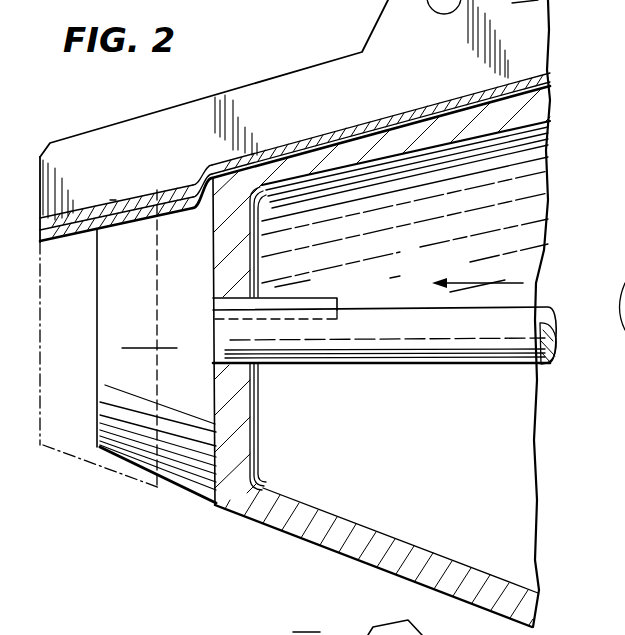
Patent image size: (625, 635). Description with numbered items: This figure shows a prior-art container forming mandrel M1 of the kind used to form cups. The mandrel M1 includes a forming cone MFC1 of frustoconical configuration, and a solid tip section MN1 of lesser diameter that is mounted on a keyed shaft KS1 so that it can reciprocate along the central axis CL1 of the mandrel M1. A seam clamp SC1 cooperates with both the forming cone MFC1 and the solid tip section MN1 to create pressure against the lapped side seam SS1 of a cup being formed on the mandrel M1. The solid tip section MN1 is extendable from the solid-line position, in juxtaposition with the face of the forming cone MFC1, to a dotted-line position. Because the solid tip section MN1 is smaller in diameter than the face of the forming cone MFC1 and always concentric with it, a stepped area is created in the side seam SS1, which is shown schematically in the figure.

The seam clamp SC1 is at (300, 90).
The side seam SS1 is at (409, 104).
The forming cone MFC1 is at (366, 160).
The container forming mandrel M1 is at (490, 259).
The keyed shaft KS1 is at (316, 304).
The central axis CL1 is at (492, 348).
The solid tip section MN1 is at (197, 422).